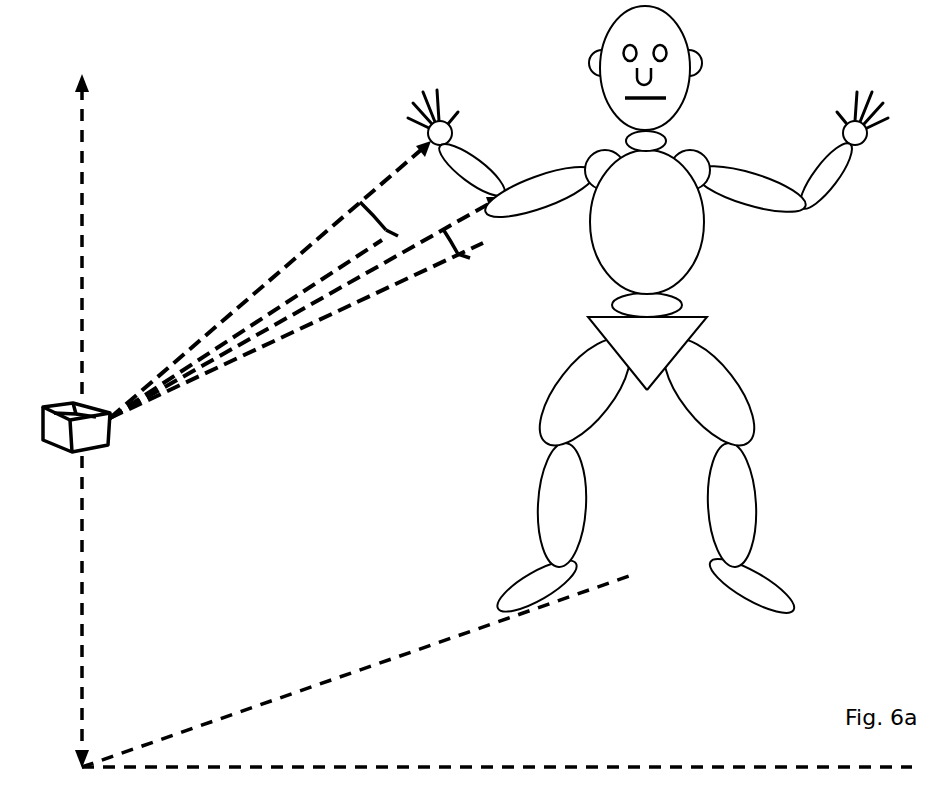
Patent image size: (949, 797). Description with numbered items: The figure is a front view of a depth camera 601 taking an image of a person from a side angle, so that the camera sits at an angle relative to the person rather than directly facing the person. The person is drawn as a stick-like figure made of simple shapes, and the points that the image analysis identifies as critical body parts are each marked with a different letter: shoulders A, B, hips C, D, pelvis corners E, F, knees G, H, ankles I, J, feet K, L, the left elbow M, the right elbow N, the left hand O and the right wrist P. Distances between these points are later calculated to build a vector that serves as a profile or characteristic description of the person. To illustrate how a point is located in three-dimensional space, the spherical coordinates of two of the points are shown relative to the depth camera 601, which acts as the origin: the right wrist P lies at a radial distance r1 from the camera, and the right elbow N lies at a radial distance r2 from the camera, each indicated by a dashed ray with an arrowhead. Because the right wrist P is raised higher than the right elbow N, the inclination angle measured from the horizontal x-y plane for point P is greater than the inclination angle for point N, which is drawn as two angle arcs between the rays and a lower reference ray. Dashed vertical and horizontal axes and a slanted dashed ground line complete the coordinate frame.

The depth camera 601 is at (100, 444).
The radial distance to right wrist r1 is at (270, 278).
The radial distance to right elbow r2 is at (305, 304).
The critical body part A is at (552, 179).
The critical body part B is at (740, 176).
The critical body part C is at (638, 299).
The critical body part D is at (647, 228).
The critical body part E is at (608, 345).
The critical body part F is at (687, 345).
The critical body part G is at (583, 391).
The critical body part H is at (715, 391).
The critical body part I is at (556, 505).
The critical body part J is at (737, 505).
The critical body part K is at (757, 593).
The critical body part L is at (524, 585).
The critical body part M is at (825, 189).
The right elbow N is at (477, 169).
The critical body part O is at (864, 132).
The right wrist P is at (454, 117).